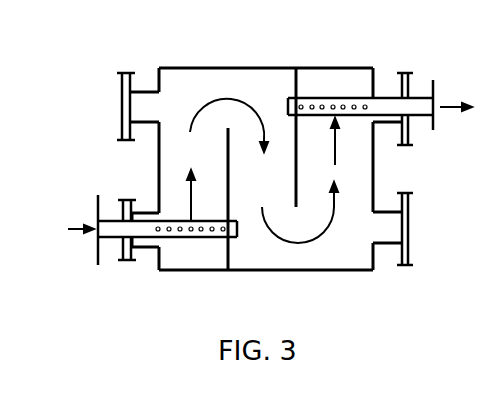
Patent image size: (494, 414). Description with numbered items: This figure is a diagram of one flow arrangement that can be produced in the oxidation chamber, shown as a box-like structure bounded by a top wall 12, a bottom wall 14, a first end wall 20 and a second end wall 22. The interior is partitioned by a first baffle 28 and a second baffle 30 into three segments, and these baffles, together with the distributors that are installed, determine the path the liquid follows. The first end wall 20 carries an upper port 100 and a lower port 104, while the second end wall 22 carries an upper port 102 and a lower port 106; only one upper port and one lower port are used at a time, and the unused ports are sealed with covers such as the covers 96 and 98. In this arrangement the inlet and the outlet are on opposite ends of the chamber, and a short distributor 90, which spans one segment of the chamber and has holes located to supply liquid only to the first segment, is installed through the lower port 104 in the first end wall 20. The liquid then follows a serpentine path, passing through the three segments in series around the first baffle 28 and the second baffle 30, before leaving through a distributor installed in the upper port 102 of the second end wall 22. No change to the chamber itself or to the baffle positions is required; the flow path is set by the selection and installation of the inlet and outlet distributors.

The top wall 12 is at (240, 67).
The bottom wall 14 is at (325, 270).
The first end wall 20 is at (159, 167).
The second end wall 22 is at (373, 163).
The first baffle 28 is at (232, 255).
The second baffle 30 is at (295, 83).
The short distributor 90 is at (184, 237).
The cover 96 is at (408, 247).
The cover 98 is at (120, 108).
The upper port 100 is at (147, 102).
The upper port 102 is at (382, 93).
The lower port 104 is at (148, 240).
The lower port 106 is at (382, 232).